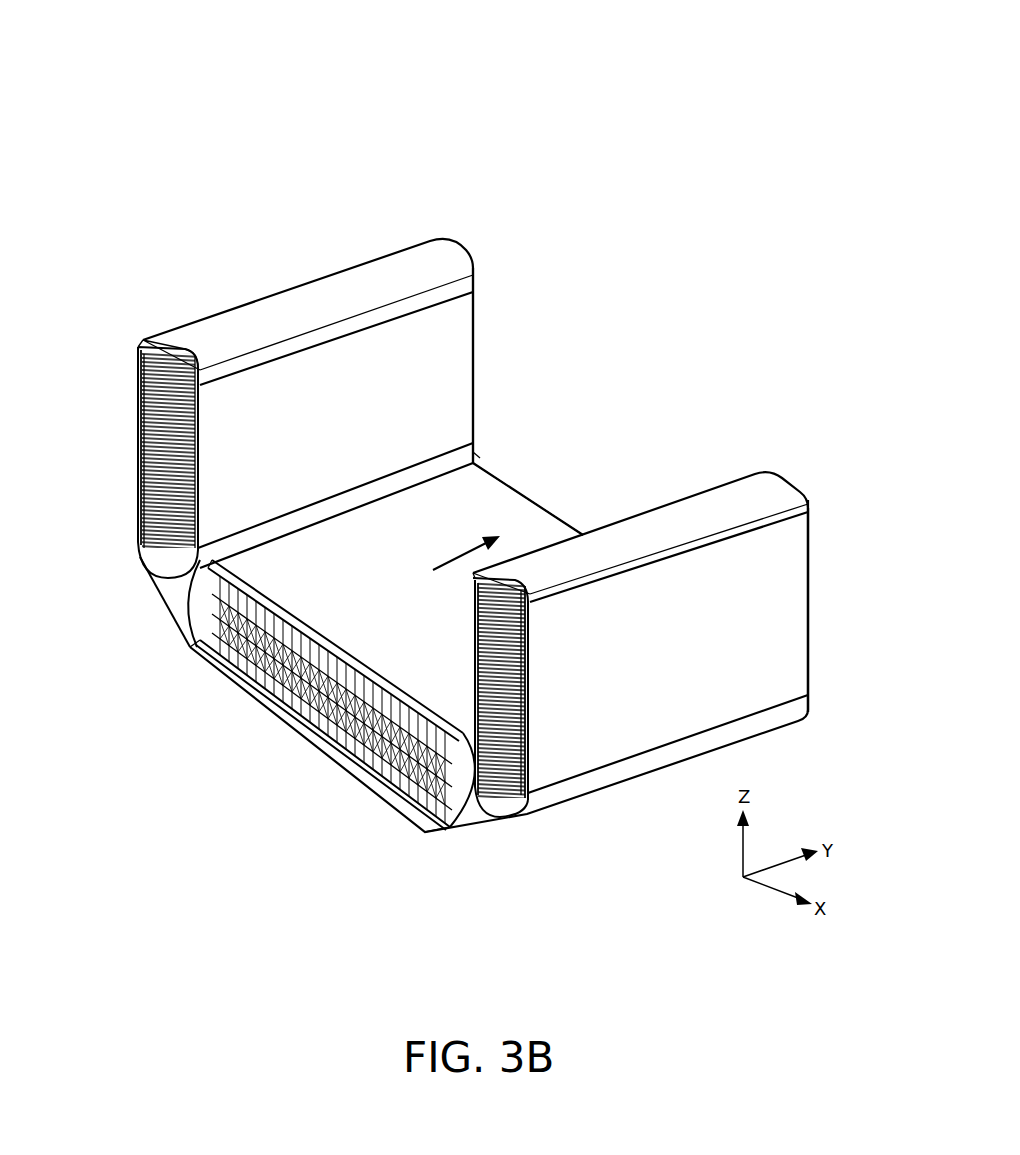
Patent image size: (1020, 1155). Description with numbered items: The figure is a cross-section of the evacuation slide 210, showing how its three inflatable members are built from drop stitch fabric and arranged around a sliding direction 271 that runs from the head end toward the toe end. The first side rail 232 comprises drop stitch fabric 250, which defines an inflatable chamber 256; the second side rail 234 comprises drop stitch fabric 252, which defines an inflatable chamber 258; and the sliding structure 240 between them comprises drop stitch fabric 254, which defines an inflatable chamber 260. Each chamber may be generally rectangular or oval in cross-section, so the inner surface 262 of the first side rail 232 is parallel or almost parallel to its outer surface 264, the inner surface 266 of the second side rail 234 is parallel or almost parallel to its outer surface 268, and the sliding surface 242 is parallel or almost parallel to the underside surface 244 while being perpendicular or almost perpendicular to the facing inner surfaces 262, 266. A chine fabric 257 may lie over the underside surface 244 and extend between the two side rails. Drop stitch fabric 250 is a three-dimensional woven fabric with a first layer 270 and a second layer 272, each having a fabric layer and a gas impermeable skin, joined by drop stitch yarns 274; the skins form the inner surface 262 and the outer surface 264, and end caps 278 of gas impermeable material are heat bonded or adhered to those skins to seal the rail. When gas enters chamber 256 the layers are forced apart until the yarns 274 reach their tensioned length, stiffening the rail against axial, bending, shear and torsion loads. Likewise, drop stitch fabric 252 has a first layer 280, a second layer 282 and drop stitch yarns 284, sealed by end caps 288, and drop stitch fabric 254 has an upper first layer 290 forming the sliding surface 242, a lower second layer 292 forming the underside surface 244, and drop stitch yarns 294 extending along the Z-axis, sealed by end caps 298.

The evacuation slide 210 is at (343, 110).
The first side rail 232 is at (783, 458).
The second side rail 234 is at (443, 238).
The sliding structure 240 is at (572, 508).
The sliding surface 242 is at (442, 530).
The underside surface 244 is at (350, 755).
The drop stitch fabric 250 is at (803, 600).
The drop stitch fabric 252 is at (462, 345).
The drop stitch fabric 254 is at (520, 495).
The inflatable chamber 256 is at (538, 630).
The chine fabric 257 is at (385, 805).
The inflatable chamber 258 is at (190, 497).
The inflatable chamber 260 is at (196, 622).
The inner surface 262 is at (477, 625).
The outer surface 264 is at (690, 676).
The inner surface 266 is at (353, 424).
The outer surface 268 is at (140, 405).
The first layer 270 is at (477, 660).
The sliding direction 271 is at (450, 558).
The second layer 272 is at (530, 660).
The drop stitch yarns 274 is at (512, 692).
The end caps 278 is at (705, 520).
The first layer 280 is at (200, 420).
The second layer 282 is at (140, 462).
The drop stitch yarns 284 is at (140, 490).
The end caps 288 is at (292, 300).
The first layer 290 is at (352, 660).
The second layer 292 is at (300, 730).
The drop stitch yarns 294 is at (300, 650).
The end caps 298 is at (478, 456).